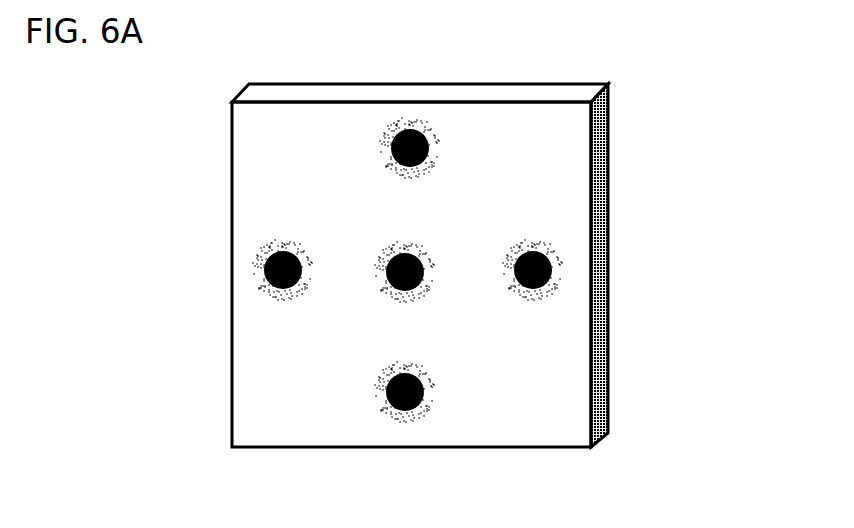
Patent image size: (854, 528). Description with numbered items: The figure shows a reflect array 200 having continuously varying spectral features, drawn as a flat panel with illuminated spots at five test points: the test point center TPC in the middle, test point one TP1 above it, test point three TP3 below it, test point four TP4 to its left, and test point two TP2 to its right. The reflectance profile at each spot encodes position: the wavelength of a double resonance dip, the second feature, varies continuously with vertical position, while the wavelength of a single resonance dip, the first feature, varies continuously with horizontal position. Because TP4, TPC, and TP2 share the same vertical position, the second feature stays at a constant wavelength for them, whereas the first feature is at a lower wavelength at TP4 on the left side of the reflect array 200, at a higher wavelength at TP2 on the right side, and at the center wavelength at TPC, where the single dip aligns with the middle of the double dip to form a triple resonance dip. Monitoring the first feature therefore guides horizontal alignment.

The reflect array 200 is at (650, 83).
The test point one TP1 is at (387, 127).
The test point two TP2 is at (556, 258).
The test point three TP3 is at (411, 418).
The test point four TP4 is at (258, 280).
The test point center TPC is at (430, 272).